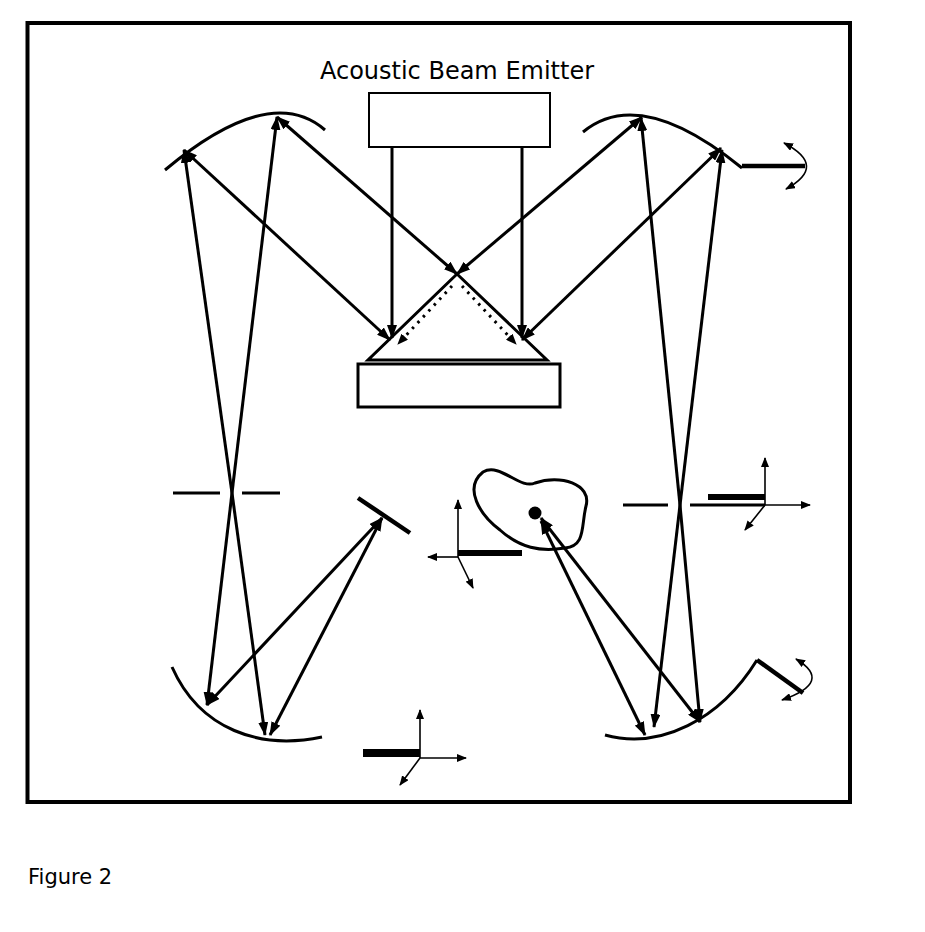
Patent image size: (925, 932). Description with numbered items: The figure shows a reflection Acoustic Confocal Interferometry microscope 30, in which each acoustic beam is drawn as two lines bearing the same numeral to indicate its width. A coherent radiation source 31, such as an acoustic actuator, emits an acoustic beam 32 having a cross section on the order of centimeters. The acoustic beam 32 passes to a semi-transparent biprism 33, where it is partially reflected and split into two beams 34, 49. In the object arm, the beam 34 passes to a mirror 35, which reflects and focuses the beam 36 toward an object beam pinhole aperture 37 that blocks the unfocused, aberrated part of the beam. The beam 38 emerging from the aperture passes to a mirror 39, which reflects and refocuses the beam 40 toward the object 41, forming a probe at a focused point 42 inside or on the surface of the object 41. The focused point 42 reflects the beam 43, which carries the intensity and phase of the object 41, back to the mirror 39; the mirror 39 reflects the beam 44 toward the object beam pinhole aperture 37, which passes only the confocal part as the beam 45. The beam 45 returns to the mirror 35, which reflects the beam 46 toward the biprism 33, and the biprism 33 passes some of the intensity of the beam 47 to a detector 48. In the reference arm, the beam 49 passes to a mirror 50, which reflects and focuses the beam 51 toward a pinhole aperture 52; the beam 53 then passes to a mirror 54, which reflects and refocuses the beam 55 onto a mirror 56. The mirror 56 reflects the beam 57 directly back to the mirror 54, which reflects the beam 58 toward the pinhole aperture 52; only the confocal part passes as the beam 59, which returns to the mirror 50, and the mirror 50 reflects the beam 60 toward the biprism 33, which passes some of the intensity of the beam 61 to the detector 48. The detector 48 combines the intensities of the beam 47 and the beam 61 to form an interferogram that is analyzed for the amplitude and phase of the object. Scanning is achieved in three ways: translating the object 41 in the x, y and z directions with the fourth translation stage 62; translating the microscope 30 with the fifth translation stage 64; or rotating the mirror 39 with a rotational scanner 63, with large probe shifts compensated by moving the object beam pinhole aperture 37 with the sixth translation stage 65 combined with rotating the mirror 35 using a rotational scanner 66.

The reflection Acoustic Confocal Interferometry microscope 30 is at (439, 412).
The coherent radiation source 31 is at (459, 120).
The acoustic beam 32 is at (457, 242).
The semi-transparent biprism 33 is at (457, 317).
The beam 34 is at (589, 228).
The mirror 35 is at (689, 130).
The beam 36 is at (680, 311).
The object beam pinhole aperture 37 is at (692, 493).
The beam 38 is at (689, 616).
The mirror 39 is at (662, 719).
The beam 40 is at (614, 626).
The object 41 is at (530, 503).
The focused point 42 is at (520, 515).
The beam 43 is at (614, 626).
The beam 44 is at (689, 616).
The beam 45 is at (680, 311).
The beam 46 is at (589, 228).
The beam 47 is at (457, 323).
The detector 48 is at (459, 385).
The beam 49 is at (320, 228).
The mirror 50 is at (216, 130).
The beam 51 is at (209, 305).
The pinhole aperture 52 is at (231, 481).
The beam 53 is at (225, 614).
The mirror 54 is at (211, 696).
The beam 55 is at (299, 626).
The mirror 56 is at (384, 510).
The beam 57 is at (299, 626).
The beam 58 is at (225, 614).
The beam 59 is at (209, 305).
The beam 60 is at (320, 228).
The beam 61 is at (457, 323).
The fourth translation stage (TS4) 62 is at (475, 548).
The rotational scanner 63 is at (784, 707).
The translation stage 5 (TS5) 64 is at (421, 749).
The translation stage 6 (TS6) 65 is at (766, 502).
The rotational scanner 66 is at (774, 193).